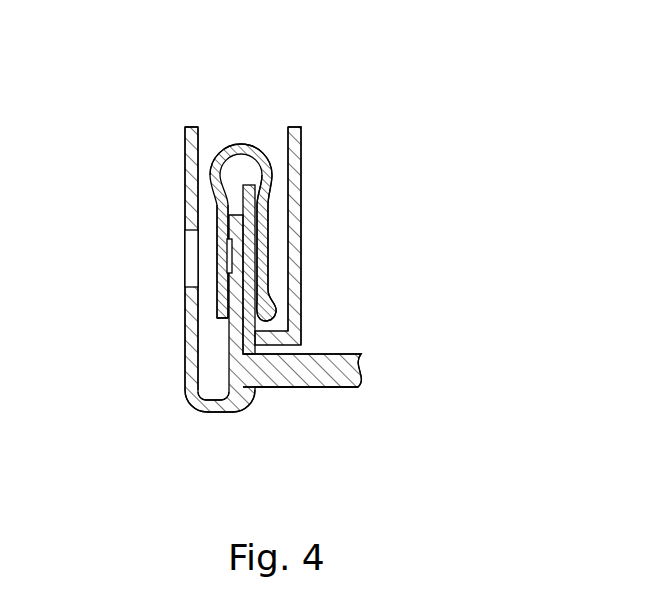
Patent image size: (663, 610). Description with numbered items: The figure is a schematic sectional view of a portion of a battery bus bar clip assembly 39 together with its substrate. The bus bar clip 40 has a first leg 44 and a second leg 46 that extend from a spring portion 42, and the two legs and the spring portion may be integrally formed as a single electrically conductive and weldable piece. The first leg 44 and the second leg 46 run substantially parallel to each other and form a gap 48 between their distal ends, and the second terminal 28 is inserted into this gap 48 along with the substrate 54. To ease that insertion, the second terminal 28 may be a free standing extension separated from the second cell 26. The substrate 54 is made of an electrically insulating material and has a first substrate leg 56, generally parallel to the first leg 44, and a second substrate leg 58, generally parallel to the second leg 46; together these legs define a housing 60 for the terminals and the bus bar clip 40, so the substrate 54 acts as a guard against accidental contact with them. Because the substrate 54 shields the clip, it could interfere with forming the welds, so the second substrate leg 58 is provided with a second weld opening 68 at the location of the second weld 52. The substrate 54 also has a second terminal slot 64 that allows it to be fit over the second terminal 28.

The second cell 26 is at (360, 354).
The second terminal 28 is at (238, 330).
The battery bus bar clip assembly 39 is at (175, 397).
The bus bar clip 40 is at (228, 127).
The spring portion 42 is at (245, 142).
The first leg 44 is at (263, 228).
The second leg 46 is at (220, 305).
The gap 48 is at (253, 322).
The second weld 52 is at (228, 245).
The substrate 54 is at (232, 427).
The first substrate leg 56 is at (300, 152).
The second substrate leg 58 is at (185, 147).
The housing 60 is at (273, 145).
The second terminal slot 64 is at (267, 389).
The second weld opening 68 is at (188, 258).